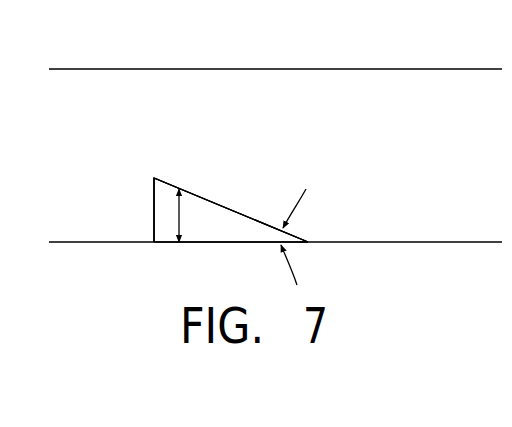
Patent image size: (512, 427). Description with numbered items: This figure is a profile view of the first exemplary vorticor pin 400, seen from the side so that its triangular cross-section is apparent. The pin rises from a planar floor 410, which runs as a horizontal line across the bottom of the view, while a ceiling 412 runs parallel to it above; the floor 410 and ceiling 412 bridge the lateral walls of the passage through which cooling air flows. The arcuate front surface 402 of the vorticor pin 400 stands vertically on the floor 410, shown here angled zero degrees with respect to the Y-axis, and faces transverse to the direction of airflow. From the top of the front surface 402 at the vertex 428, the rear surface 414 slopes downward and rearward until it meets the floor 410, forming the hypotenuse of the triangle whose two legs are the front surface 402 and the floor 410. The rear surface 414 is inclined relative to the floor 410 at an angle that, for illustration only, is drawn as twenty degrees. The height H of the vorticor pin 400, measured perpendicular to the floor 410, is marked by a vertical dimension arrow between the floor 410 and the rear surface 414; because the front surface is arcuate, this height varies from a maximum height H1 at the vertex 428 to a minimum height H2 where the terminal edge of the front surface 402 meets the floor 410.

The vorticor pin 400 is at (157, 176).
The front surface 402 is at (230, 236).
The floor 410 is at (450, 242).
The ceiling 412 is at (297, 69).
The rear surface 414 is at (232, 209).
The vertex 428 is at (153, 207).
The height H is at (182, 212).
The maximum height H1 is at (152, 224).
The minimum height H2 is at (310, 243).